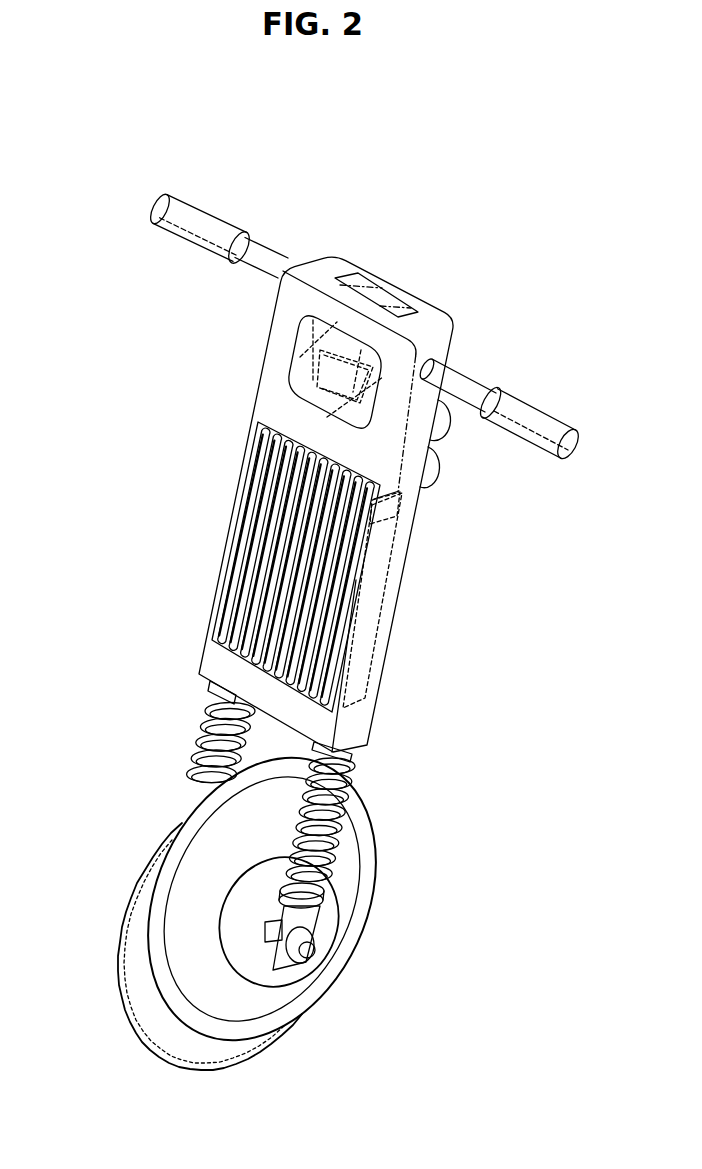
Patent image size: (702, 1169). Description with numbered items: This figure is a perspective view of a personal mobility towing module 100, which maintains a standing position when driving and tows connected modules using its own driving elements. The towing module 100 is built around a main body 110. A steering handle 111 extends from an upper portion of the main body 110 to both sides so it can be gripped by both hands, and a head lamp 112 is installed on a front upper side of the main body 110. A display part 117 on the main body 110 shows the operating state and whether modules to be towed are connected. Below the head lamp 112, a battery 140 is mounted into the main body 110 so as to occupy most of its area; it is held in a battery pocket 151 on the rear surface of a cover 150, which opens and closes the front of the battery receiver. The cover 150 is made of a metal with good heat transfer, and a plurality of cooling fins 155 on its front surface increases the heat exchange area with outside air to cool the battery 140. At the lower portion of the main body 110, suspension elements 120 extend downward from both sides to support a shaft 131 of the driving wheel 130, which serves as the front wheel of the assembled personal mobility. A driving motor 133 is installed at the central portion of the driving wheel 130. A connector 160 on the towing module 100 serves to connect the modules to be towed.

The towing module 100 is at (301, 208).
The main body 110 is at (270, 402).
The steering handle 111 is at (481, 383).
The head lamp 112 is at (303, 357).
The display part 117 is at (381, 296).
The suspension elements 120 is at (205, 730).
The driving wheel 130 is at (128, 944).
The shaft 131 is at (312, 950).
The driving motor 133 is at (254, 970).
The battery 140 is at (390, 512).
The cover 150 is at (232, 607).
The battery pocket 151 is at (383, 615).
The cooling fins 155 is at (260, 512).
The connector 160 is at (460, 489).